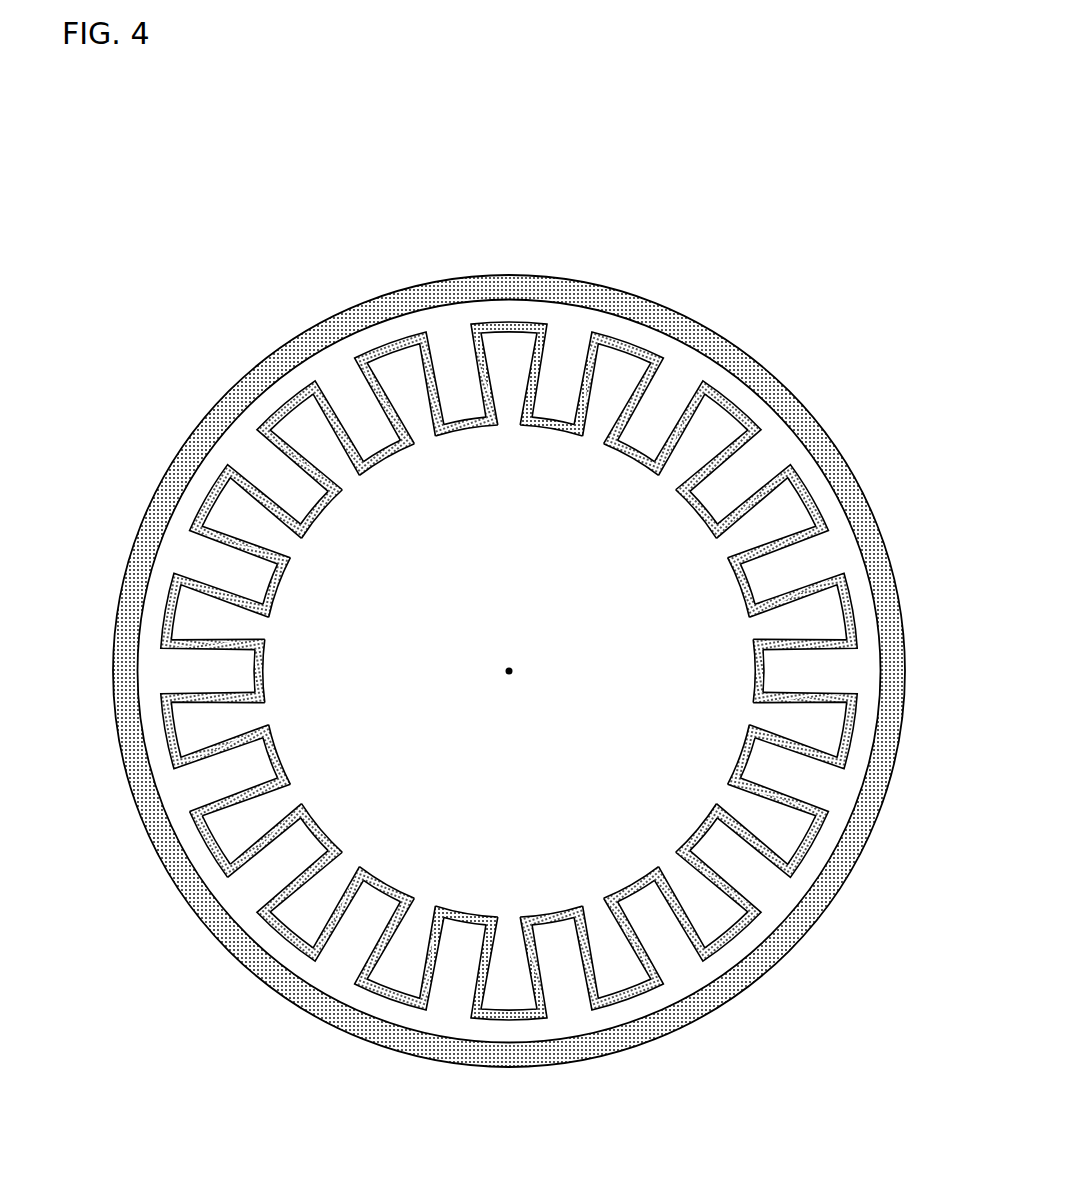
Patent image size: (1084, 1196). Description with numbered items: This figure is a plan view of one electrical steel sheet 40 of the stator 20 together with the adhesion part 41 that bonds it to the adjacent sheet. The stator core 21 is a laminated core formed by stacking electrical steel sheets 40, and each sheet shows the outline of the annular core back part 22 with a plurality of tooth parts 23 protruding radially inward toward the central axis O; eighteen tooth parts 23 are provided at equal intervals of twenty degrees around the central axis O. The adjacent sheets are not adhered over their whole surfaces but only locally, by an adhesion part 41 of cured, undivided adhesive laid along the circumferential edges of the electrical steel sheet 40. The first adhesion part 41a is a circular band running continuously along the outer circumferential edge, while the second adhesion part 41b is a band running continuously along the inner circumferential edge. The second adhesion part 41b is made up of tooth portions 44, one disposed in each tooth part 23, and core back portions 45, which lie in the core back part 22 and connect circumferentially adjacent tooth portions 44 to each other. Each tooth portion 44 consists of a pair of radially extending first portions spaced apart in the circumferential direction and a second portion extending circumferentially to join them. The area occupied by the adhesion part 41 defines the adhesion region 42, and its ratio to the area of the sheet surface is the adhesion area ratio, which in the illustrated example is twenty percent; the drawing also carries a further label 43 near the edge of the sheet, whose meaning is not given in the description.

The stator 20 is at (843, 127).
The stator core 21 is at (735, 216).
The core back part 22 is at (701, 352).
The tooth part 23 is at (647, 387).
The electrical steel sheet 40 is at (276, 385).
The adhesion part 41 is at (518, 671).
The first adhesion part 41a is at (812, 392).
The second adhesion part 41b is at (772, 494).
The adhesion region 42 is at (427, 290).
The gap 43 is at (842, 538).
The tooth portion 44 is at (200, 791).
The core back portion 45 is at (165, 732).
The central axis O is at (516, 669).